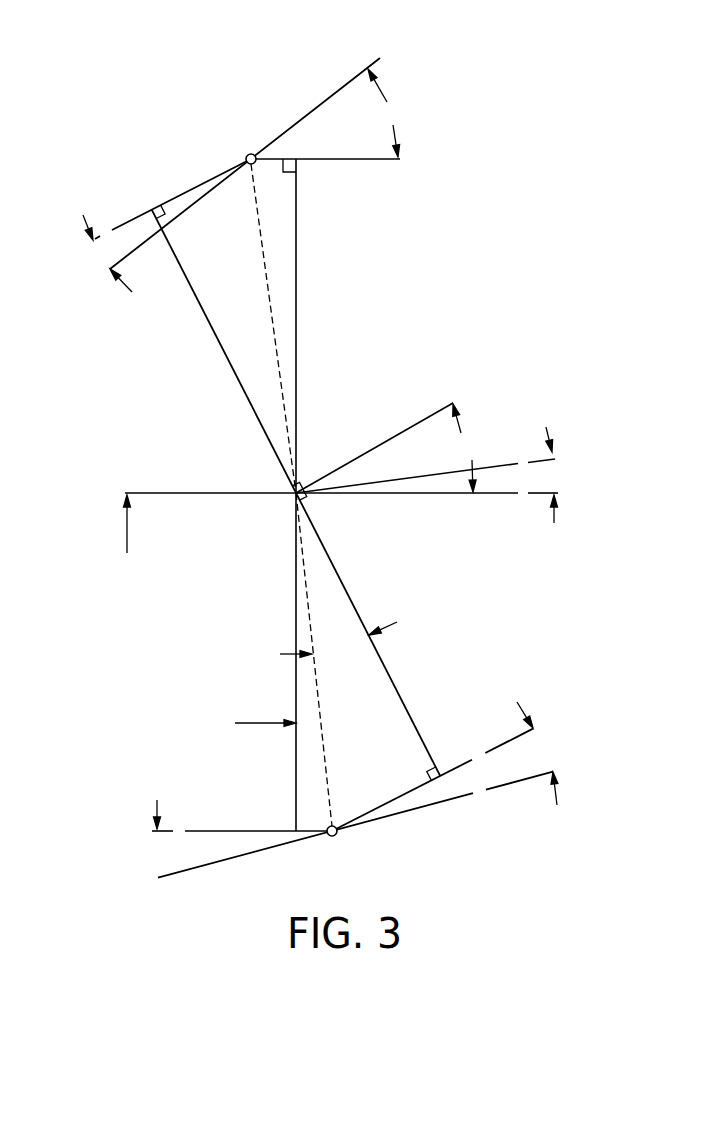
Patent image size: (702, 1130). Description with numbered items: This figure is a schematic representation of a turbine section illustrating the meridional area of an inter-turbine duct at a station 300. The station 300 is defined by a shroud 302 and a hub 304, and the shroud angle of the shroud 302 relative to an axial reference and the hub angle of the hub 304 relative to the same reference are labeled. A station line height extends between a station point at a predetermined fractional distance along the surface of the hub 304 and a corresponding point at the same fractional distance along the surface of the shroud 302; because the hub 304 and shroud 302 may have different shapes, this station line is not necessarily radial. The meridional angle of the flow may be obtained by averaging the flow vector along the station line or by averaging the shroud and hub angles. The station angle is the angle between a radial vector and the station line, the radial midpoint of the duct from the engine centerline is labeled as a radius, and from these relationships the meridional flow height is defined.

The station 300 is at (307, 434).
The shroud 302 is at (291, 126).
The hub 304 is at (412, 810).